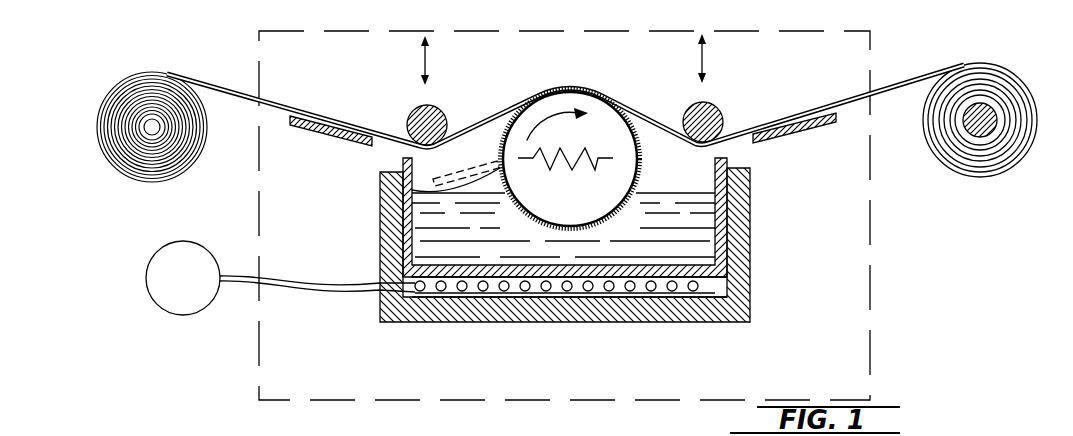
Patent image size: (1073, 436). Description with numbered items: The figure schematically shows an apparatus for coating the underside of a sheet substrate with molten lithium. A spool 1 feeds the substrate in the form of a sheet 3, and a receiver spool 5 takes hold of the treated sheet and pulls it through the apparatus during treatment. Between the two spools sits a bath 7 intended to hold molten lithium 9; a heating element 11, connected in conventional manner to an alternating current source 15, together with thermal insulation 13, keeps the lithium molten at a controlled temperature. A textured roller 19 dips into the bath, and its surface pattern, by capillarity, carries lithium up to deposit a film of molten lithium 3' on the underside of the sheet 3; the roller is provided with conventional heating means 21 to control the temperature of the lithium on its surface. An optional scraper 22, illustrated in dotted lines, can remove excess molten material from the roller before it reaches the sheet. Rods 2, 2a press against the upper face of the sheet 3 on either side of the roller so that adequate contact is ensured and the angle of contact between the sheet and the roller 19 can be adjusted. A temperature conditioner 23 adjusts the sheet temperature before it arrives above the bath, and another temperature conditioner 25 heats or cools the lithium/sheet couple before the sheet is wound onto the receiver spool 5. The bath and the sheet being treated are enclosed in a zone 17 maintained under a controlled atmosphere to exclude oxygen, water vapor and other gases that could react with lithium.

The spool 1 is at (152, 183).
The rod 2 is at (436, 108).
The rod 2a is at (690, 110).
The sheet 3 is at (565, 73).
The film of molten lithium 3' is at (837, 116).
The receiver spool 5 is at (993, 178).
The bath 7 is at (750, 220).
The molten lithium 9 is at (680, 238).
The heating element 11 is at (608, 290).
The thermal insulation 13 is at (707, 310).
The alternating current source 15 is at (185, 303).
The controlled atmosphere zone 17 is at (873, 318).
The textured roller 19 is at (383, 172).
The heating means 21 is at (556, 141).
The scraper 22 is at (477, 158).
The temperature conditioner 23 is at (335, 118).
The temperature conditioner 25 is at (831, 127).